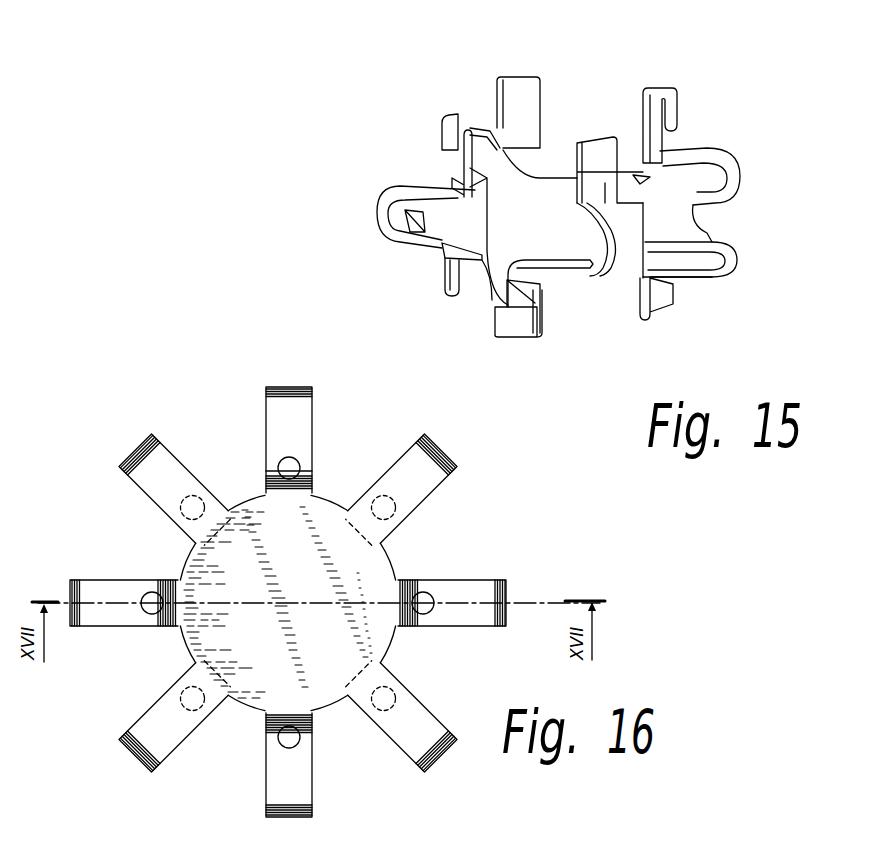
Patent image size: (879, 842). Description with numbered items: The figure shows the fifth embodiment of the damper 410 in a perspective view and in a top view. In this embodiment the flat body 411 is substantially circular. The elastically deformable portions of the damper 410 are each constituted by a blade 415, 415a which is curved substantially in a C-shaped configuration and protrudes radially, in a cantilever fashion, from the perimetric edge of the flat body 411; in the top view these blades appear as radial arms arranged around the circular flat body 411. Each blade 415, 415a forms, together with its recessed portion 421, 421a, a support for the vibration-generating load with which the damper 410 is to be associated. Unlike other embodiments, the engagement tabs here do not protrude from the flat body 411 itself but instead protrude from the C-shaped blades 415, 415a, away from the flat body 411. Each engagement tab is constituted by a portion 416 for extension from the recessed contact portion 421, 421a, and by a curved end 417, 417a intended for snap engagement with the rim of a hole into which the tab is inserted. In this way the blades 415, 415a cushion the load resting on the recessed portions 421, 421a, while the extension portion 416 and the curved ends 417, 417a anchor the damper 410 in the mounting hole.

In FIG. 15, the damper 410 is at (338, 150).
In FIG. 15, the flat body 411 is at (533, 187).
In FIG. 16, the flat body 411 is at (326, 535).
In FIG. 15, the blade 415 is at (377, 218).
In FIG. 16, the blade 415 is at (117, 593).
In FIG. 15, the blade 415a is at (487, 296).
In FIG. 16, the blade 415a is at (153, 452).
In FIG. 15, the extension portion 416 is at (521, 90).
In FIG. 15, the curved end 417 is at (445, 124).
In FIG. 16, the curved end 417 is at (267, 477).
In FIG. 15, the curved end 417a is at (527, 330).
In FIG. 16, the curved end 417a is at (198, 684).
In FIG. 15, the recessed portion 421 is at (415, 188).
In FIG. 15, the recessed portion 421a is at (692, 278).